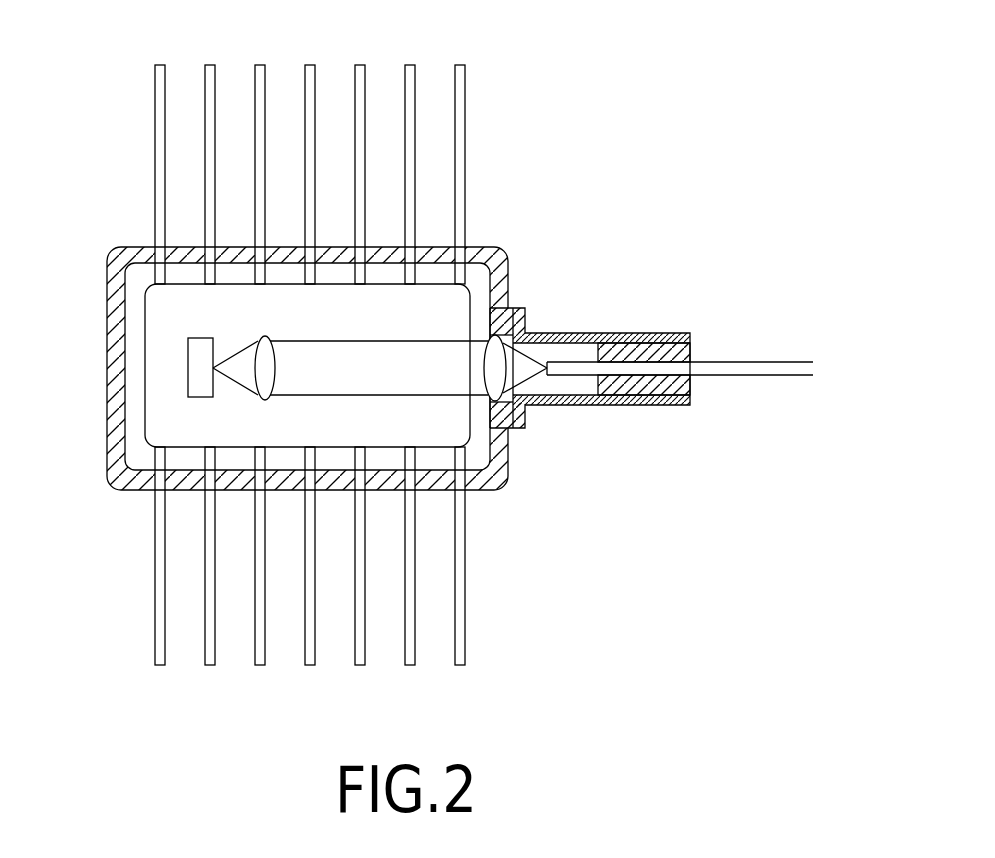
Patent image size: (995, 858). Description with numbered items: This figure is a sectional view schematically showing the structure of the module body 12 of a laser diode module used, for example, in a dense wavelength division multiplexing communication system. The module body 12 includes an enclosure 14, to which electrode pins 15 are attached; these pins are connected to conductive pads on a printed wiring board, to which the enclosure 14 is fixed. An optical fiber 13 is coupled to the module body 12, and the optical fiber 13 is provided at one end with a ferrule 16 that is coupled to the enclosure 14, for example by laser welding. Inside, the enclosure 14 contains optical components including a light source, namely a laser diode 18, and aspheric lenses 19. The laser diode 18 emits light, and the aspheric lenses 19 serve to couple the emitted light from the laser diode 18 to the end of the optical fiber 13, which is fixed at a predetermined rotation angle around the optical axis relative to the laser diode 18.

The module body 12 is at (269, 366).
The optical fiber 13 is at (747, 377).
The enclosure 14 is at (282, 366).
The electrode pins 15 is at (163, 76).
The ferrule 16 is at (666, 333).
The laser diode 18 is at (202, 398).
The aspheric lenses 19 is at (263, 338).